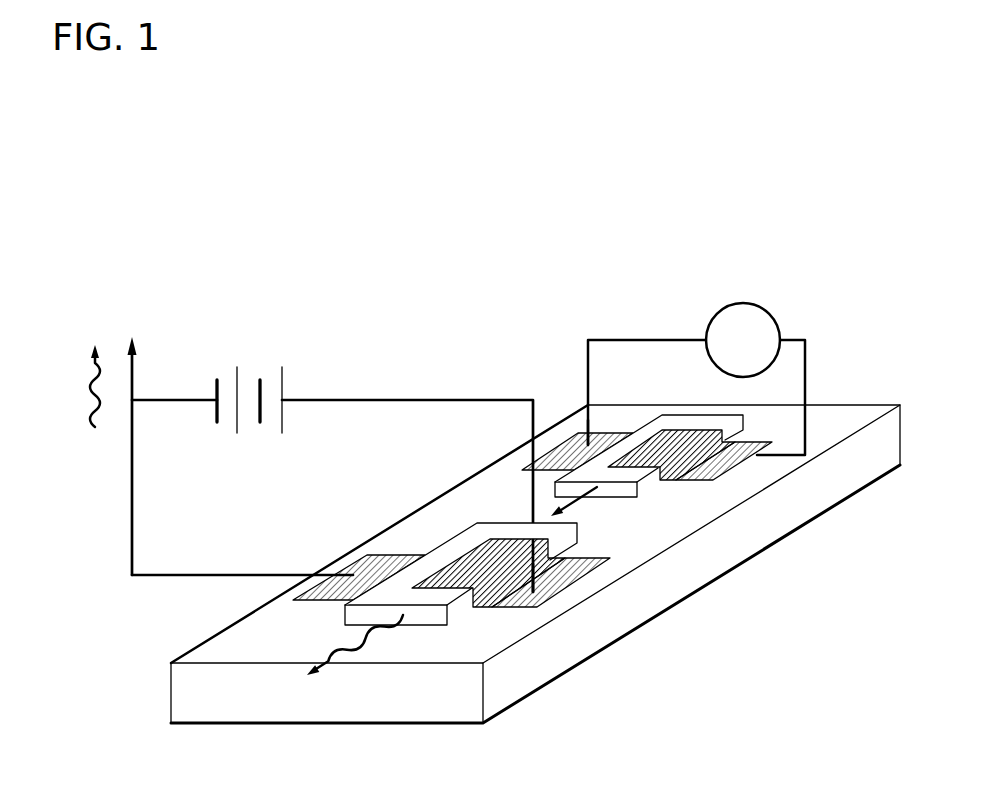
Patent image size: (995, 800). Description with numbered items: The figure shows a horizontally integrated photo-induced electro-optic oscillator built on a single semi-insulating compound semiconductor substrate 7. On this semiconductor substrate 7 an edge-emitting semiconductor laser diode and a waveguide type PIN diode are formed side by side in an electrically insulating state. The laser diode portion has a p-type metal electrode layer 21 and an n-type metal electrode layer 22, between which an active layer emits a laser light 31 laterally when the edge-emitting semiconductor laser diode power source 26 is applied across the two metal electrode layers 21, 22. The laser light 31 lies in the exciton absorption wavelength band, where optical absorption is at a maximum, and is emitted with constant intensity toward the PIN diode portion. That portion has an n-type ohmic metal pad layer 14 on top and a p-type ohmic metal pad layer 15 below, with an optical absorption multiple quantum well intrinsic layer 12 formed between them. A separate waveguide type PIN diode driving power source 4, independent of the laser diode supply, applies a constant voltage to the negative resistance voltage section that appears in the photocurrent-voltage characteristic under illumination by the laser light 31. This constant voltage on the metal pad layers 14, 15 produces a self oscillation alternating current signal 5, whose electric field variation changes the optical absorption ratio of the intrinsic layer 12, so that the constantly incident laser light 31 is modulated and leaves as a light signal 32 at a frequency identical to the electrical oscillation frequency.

The waveguide type PIN diode driving power source 4 is at (243, 371).
The self oscillation alternating current signal 5 is at (91, 401).
The semi-insulating compound semiconductor substrate 7 is at (176, 697).
The optical absorption multiple quantum well intrinsic layer 12 is at (352, 617).
The n-type ohmic metal pad layer 14 is at (552, 585).
The p-type ohmic metal pad layer 15 is at (347, 578).
The p-type metal electrode layer 21 is at (568, 445).
The n-type metal electrode layer 22 is at (720, 475).
The edge-emitting semiconductor laser diode power source 26 is at (743, 340).
The laser light 31 is at (577, 503).
The light signal 32 is at (346, 662).